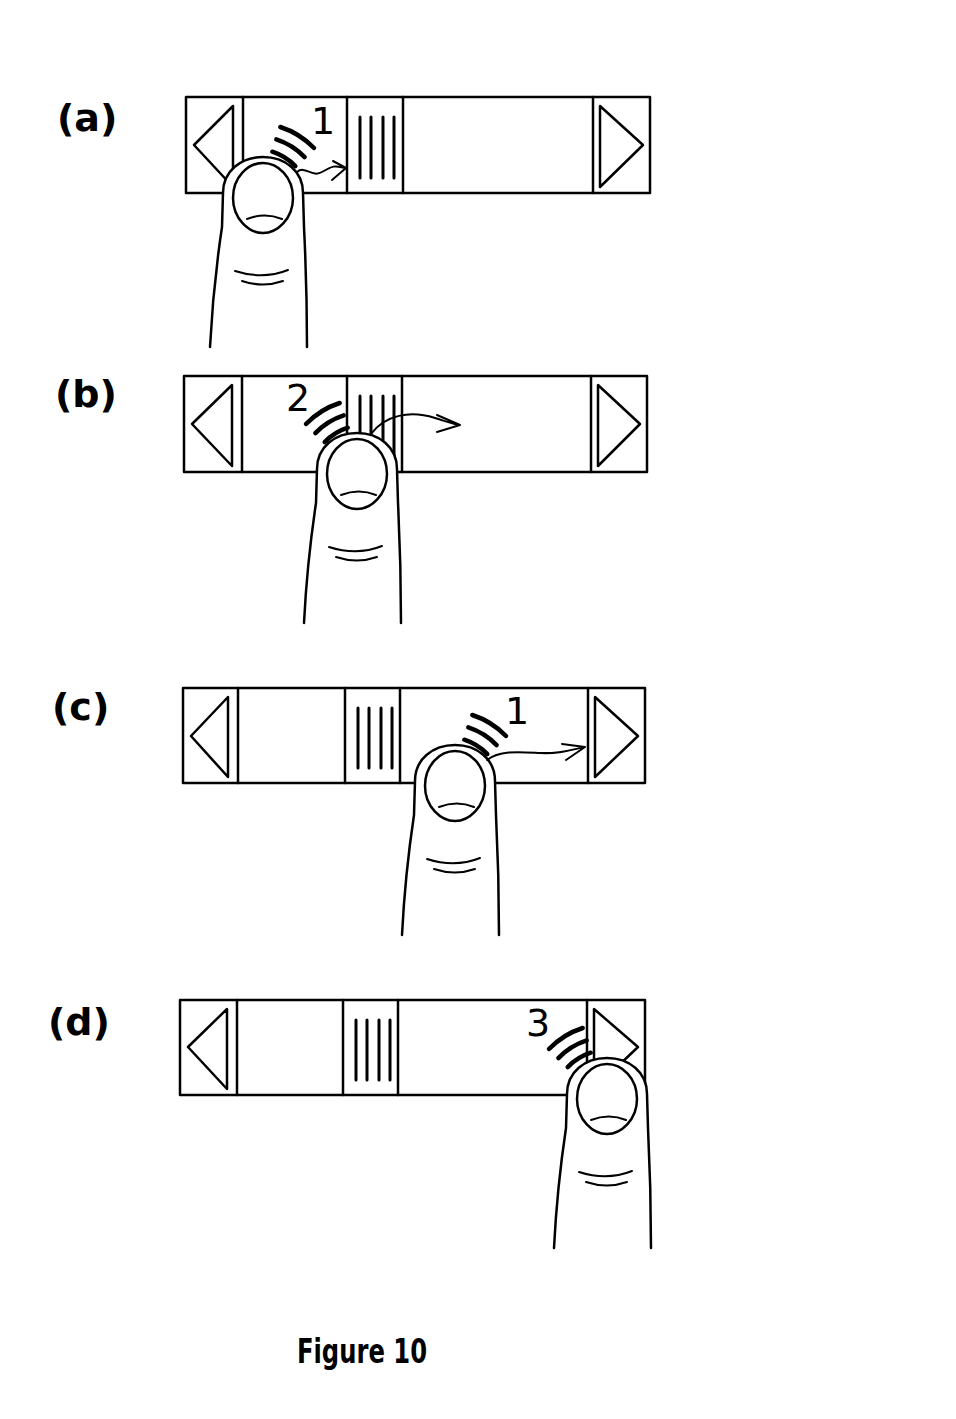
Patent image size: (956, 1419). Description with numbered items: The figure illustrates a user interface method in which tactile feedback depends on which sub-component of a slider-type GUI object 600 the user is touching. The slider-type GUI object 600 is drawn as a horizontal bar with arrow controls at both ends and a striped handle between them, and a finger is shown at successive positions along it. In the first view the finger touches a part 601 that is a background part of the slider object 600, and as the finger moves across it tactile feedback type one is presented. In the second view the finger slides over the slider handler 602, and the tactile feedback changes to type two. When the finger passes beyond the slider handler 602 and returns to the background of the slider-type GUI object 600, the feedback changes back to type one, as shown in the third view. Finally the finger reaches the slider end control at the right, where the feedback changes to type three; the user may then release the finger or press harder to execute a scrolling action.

The slider-type GUI object 600 is at (418, 104).
The background part 601 is at (262, 117).
The slider handler 602 is at (387, 393).